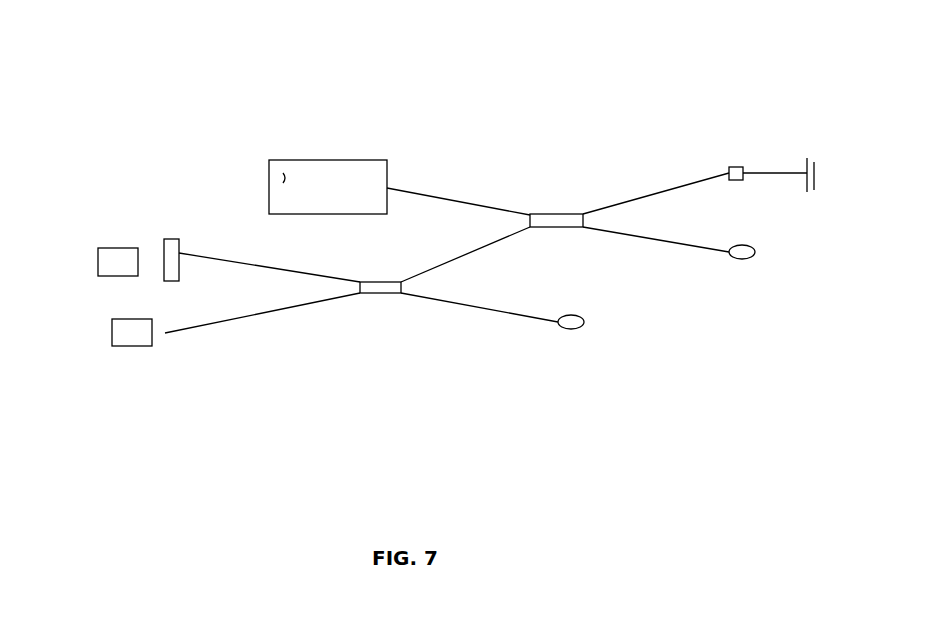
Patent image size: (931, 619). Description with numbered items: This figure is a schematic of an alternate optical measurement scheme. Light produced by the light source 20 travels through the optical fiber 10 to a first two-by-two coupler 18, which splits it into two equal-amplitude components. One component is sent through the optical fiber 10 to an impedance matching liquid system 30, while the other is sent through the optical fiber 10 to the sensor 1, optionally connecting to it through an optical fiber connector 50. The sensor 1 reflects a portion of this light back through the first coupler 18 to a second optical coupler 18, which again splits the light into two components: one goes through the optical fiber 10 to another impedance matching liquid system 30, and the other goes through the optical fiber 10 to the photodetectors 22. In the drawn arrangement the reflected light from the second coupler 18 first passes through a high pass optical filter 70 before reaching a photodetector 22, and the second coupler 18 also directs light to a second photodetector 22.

The sensor 1 is at (806, 192).
The optical fiber 10 is at (672, 243).
The 2×2 coupler 18 is at (557, 213).
The light source 20 is at (327, 150).
The photodetector 22 is at (98, 280).
The impedance matching liquid system 30 is at (748, 260).
The optical fiber connector 50 is at (735, 150).
The high pass optical filter 70 is at (174, 240).